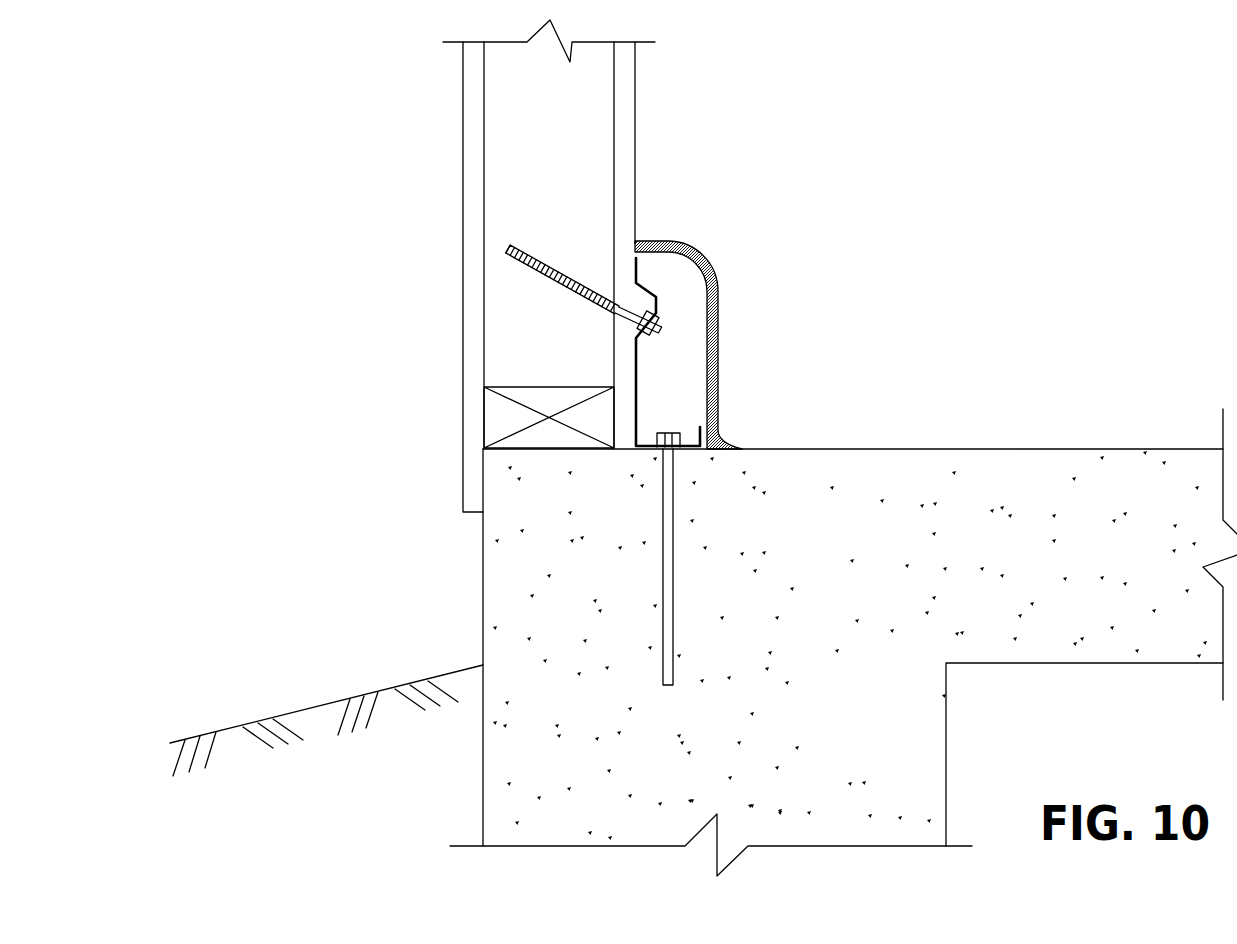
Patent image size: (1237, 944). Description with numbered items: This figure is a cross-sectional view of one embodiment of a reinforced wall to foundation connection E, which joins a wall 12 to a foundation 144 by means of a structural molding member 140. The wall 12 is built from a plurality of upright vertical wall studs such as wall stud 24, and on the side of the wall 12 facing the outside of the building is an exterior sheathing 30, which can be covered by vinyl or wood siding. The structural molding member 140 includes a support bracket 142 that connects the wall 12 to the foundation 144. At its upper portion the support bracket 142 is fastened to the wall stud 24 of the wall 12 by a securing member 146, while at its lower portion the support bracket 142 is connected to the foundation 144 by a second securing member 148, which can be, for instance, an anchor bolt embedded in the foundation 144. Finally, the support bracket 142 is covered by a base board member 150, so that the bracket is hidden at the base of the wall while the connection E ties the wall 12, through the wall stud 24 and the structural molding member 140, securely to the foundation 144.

The wall 12 is at (497, 107).
The wall stud 24 is at (597, 152).
The exterior sheathing 30 is at (463, 255).
The structural molding member 140 is at (777, 322).
The support bracket 142 is at (640, 392).
The foundation 144 is at (988, 473).
The securing member 146 is at (548, 268).
The securing member 148 is at (668, 602).
The base board member 150 is at (700, 270).
The wall to foundation connection E is at (942, 162).